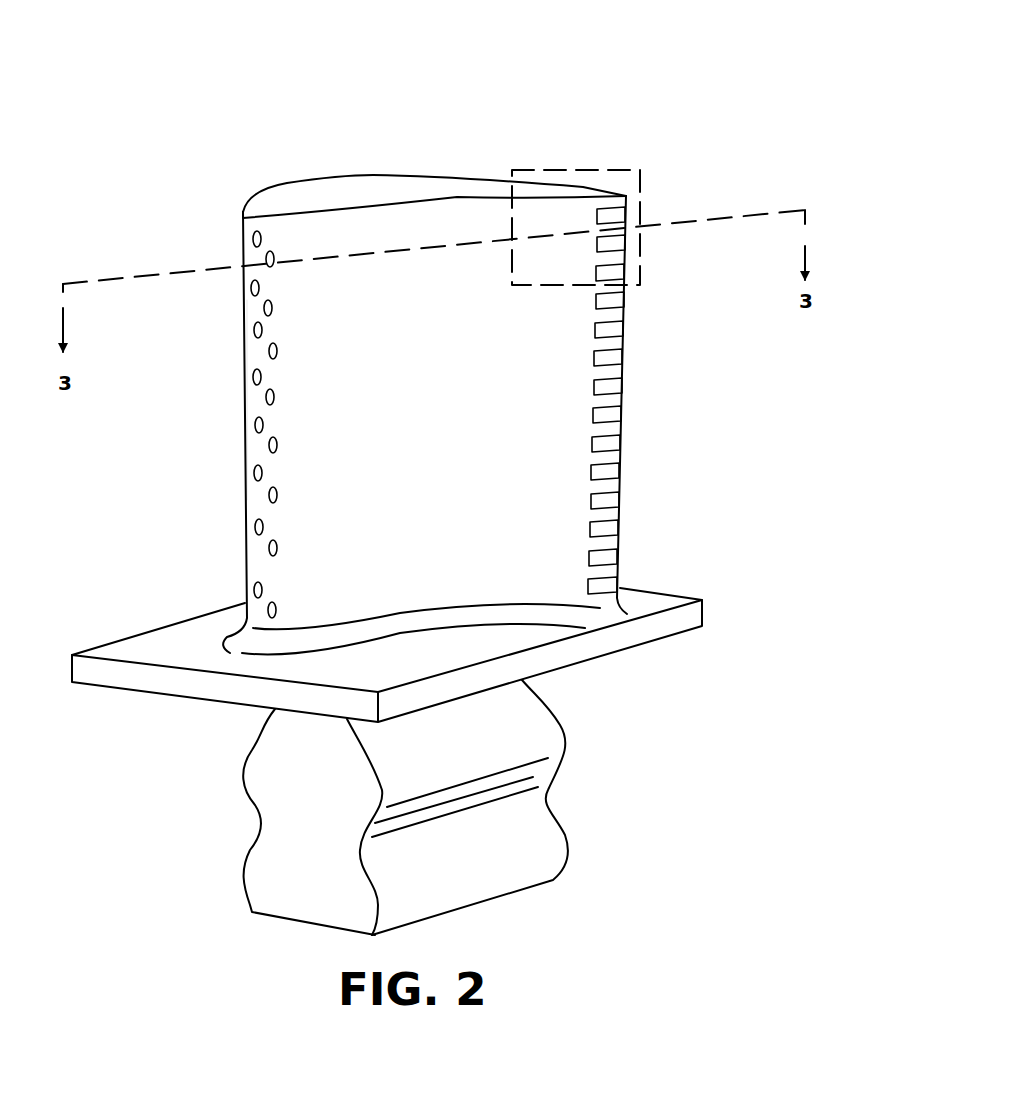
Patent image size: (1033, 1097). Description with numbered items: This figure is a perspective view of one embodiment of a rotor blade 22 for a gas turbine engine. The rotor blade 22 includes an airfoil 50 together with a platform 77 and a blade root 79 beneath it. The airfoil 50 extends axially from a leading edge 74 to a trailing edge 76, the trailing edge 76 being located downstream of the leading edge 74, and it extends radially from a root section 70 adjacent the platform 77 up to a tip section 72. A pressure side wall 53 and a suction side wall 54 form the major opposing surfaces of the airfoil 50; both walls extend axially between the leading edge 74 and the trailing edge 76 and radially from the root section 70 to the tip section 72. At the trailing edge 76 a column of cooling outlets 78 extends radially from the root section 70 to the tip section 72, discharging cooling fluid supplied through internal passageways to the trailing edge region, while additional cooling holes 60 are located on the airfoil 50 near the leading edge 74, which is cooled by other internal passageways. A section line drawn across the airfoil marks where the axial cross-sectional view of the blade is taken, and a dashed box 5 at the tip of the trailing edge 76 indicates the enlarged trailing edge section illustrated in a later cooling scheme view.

The rotor blade 22 is at (712, 118).
The airfoil 50 is at (438, 368).
The pressure side wall 53 is at (300, 409).
The suction side wall 54 is at (360, 172).
The cooling holes 60 is at (258, 527).
The root section 70 is at (294, 598).
The tip section 72 is at (465, 188).
The leading edge 74 is at (241, 230).
The trailing edge 76 is at (653, 405).
The cooling outlets 78 is at (600, 473).
The platform 77 is at (683, 621).
The blade root 79 is at (553, 810).
The detail region of FIG. 5 is at (640, 238).